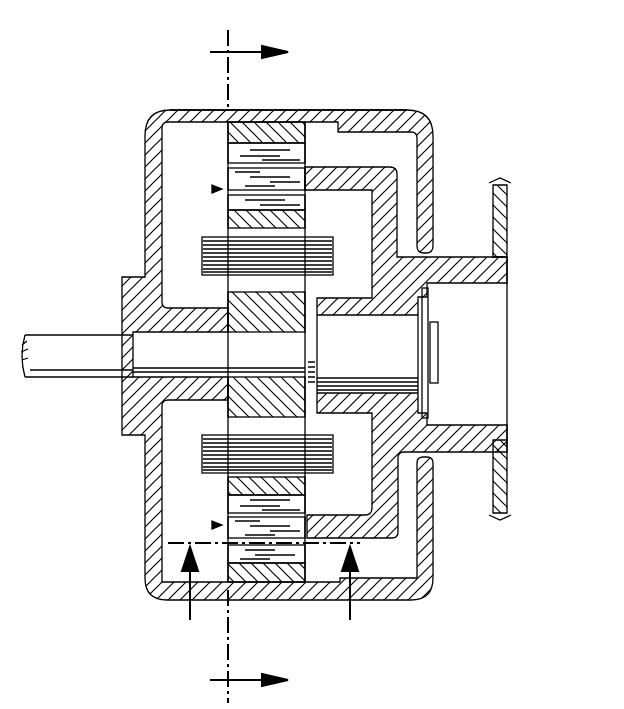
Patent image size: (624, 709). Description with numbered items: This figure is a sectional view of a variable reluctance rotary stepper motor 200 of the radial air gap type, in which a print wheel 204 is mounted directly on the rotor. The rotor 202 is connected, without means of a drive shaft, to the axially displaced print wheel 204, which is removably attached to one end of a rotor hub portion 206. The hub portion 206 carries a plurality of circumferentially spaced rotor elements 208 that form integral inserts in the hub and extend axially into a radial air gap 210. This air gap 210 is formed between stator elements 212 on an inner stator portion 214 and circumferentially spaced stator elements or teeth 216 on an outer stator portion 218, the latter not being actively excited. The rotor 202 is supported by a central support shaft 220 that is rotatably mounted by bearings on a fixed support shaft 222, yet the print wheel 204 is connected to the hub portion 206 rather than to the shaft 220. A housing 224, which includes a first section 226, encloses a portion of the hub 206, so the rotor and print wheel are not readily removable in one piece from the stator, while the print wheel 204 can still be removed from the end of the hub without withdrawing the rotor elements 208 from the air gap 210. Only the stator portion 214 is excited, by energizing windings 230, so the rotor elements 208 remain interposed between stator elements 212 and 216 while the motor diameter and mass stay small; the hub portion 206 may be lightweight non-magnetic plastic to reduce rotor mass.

The variable reluctance rotary stepper motor 200 is at (312, 366).
The rotor 202 is at (392, 177).
The print wheel 204 is at (508, 232).
The rotor hub portion 206 is at (462, 447).
The rotor elements 208 is at (237, 178).
The radial air gap 210 is at (213, 189).
The stator elements 212 is at (227, 507).
The stator portion 214 is at (227, 485).
The stator elements or teeth 216 is at (259, 556).
The stator portion 218 is at (289, 583).
The central support shaft 220 is at (400, 367).
The fixed support shaft 222 is at (150, 356).
The housing 224 is at (302, 110).
The first section 226 is at (152, 118).
The windings 230 is at (210, 248).